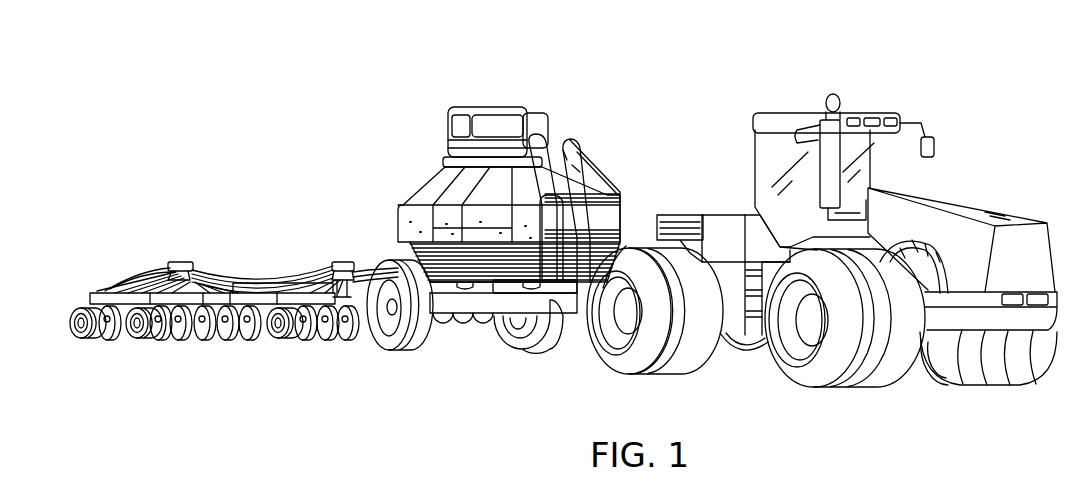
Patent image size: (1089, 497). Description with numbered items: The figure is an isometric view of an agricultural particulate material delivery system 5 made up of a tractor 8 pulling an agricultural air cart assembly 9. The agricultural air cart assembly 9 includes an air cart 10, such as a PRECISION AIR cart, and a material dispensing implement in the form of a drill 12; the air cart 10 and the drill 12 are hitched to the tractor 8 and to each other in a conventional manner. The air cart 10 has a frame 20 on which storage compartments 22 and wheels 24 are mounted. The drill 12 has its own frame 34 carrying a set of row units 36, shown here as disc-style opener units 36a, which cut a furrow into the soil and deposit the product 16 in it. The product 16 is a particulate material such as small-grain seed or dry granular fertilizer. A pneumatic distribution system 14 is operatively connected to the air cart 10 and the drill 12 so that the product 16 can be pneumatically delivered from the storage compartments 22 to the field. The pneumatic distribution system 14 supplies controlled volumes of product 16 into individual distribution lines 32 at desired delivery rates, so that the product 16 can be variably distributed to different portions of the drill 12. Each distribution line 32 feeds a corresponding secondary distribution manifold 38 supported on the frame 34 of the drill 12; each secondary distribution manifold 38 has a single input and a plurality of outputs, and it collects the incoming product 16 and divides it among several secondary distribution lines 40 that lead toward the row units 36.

The agricultural particulate material delivery system 5 is at (722, 68).
The tractor 8 is at (1010, 199).
The agricultural air cart assembly 9 is at (557, 100).
The air cart 10 is at (482, 97).
The drill 12 is at (235, 185).
The pneumatic distribution system 14 is at (352, 248).
The product 16 is at (415, 218).
The frame 20 is at (508, 288).
The storage compartments 22 is at (443, 180).
The wheels 24 is at (418, 344).
The distribution lines 32 is at (204, 278).
The frame 34 is at (265, 293).
The row units 36 is at (321, 343).
The disc-style opener units 36a is at (97, 343).
The secondary distribution manifold 38 is at (181, 261).
The secondary distribution lines 40 is at (151, 278).